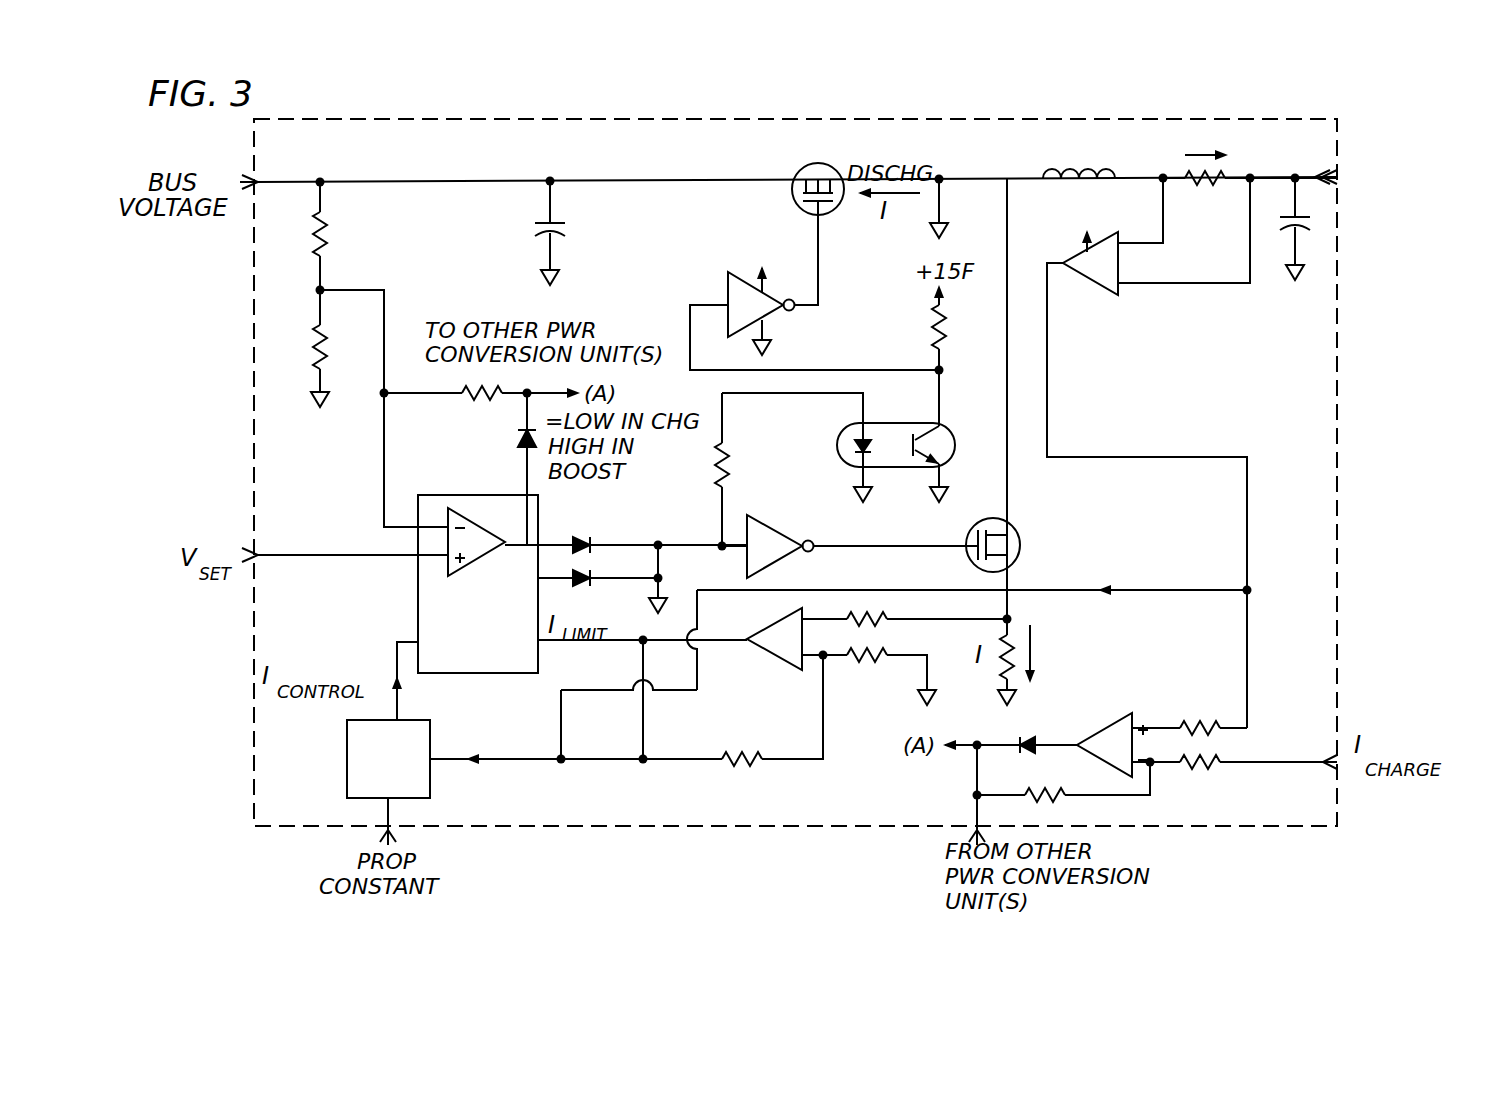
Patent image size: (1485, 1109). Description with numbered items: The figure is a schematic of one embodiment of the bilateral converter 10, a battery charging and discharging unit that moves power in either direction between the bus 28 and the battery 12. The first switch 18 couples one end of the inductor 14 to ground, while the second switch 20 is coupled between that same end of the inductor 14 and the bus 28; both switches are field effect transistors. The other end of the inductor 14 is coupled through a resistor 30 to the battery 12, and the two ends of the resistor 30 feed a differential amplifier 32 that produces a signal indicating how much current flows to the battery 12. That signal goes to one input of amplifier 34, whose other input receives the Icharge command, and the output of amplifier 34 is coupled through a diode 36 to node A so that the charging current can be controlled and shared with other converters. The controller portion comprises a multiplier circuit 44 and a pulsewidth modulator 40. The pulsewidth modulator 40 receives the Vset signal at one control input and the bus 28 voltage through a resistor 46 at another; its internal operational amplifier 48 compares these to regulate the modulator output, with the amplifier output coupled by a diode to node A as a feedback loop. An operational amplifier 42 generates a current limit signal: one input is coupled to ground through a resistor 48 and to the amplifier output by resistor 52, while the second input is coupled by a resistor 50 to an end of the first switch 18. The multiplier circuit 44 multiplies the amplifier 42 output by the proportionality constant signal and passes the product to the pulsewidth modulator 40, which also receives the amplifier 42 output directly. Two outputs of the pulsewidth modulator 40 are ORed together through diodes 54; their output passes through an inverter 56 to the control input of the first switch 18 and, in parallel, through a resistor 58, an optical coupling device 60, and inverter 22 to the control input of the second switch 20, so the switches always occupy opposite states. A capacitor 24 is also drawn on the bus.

The bilateral converter 10 is at (750, 104).
The battery 12 is at (1392, 167).
The inductor 14 is at (1075, 165).
The first switch 18 is at (1013, 528).
The second switch 20 is at (796, 172).
The inverter 22 is at (782, 312).
The bus capacitor 24 is at (568, 230).
The bus 28 is at (628, 180).
The resistor 30 is at (1190, 172).
The differential amplifier 32 is at (1098, 280).
The amplifier 34 is at (1100, 725).
The diode 36 is at (1021, 738).
The pulsewidth modulator 40 is at (418, 600).
The operational amplifier 42 is at (772, 655).
The multiplier circuit 44 is at (426, 735).
The resistor 46 is at (336, 237).
The operational amplifier 48 is at (473, 530).
The resistor 50 is at (880, 617).
The resistor 52 is at (742, 764).
The diodes 54 is at (592, 574).
The inverter 56 is at (772, 523).
The resistor 58 is at (732, 470).
The optical coupling device 60 is at (883, 423).